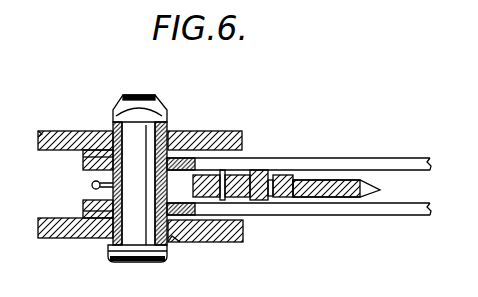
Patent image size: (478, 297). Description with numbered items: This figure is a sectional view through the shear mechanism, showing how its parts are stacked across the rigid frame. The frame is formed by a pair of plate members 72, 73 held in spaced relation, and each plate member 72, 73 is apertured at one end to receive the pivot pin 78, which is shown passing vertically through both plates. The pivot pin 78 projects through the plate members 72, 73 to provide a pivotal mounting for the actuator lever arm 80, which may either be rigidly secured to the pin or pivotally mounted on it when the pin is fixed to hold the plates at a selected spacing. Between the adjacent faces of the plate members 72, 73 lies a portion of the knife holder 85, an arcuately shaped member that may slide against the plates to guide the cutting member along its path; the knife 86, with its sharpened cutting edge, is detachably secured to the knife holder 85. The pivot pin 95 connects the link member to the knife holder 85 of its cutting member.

The plate member 72 is at (238, 160).
The plate member 73 is at (372, 208).
The pivot pin 78 is at (160, 118).
The actuator lever arm 80 is at (223, 132).
The knife holder 85 is at (255, 200).
The knife 86 is at (320, 185).
The pivot pin 95 is at (222, 200).